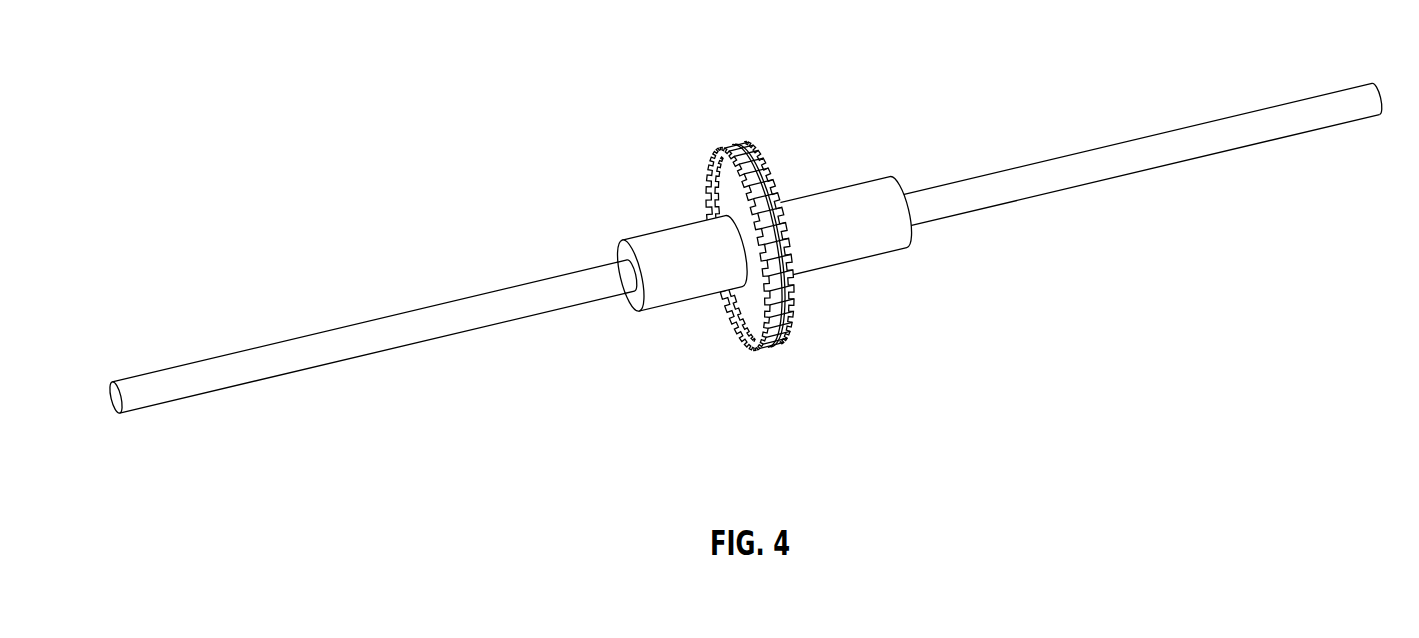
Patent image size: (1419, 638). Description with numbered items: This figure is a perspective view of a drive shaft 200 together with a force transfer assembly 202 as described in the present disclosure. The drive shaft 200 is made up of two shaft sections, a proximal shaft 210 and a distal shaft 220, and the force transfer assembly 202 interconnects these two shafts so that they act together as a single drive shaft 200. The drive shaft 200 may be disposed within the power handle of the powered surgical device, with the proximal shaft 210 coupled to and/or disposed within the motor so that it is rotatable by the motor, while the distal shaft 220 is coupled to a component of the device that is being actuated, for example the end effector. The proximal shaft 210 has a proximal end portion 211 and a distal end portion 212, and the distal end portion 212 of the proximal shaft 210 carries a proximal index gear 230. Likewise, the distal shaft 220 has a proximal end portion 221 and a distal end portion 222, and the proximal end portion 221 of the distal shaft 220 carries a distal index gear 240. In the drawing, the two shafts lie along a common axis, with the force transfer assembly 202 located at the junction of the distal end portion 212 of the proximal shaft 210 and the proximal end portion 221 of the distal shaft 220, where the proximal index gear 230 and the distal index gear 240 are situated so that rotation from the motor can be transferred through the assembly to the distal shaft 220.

The drive shaft 200 is at (776, 357).
The force transfer assembly 202 is at (713, 131).
The proximal shaft 210 is at (1318, 101).
The proximal end portion 211 is at (1360, 107).
The distal end portion 212 is at (860, 240).
The distal shaft 220 is at (173, 372).
The proximal end portion 221 is at (130, 405).
The distal end portion 222 is at (667, 287).
The proximal index gear 230 is at (747, 152).
The distal index gear 240 is at (718, 187).